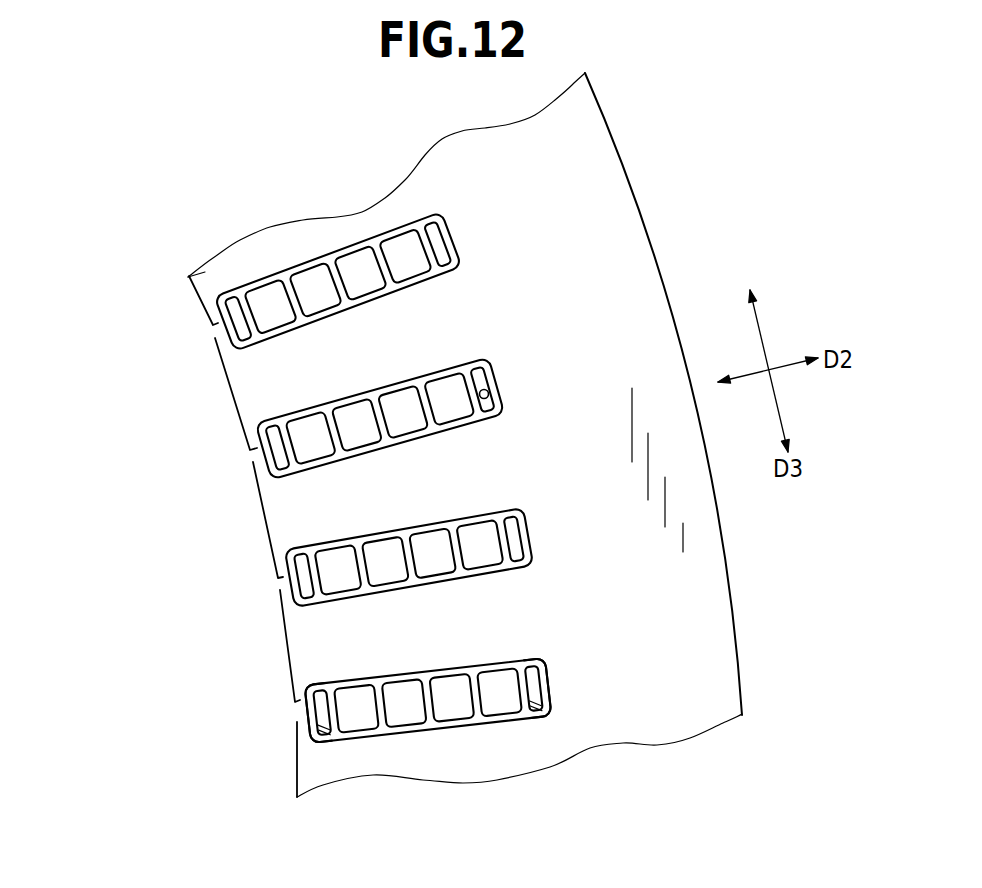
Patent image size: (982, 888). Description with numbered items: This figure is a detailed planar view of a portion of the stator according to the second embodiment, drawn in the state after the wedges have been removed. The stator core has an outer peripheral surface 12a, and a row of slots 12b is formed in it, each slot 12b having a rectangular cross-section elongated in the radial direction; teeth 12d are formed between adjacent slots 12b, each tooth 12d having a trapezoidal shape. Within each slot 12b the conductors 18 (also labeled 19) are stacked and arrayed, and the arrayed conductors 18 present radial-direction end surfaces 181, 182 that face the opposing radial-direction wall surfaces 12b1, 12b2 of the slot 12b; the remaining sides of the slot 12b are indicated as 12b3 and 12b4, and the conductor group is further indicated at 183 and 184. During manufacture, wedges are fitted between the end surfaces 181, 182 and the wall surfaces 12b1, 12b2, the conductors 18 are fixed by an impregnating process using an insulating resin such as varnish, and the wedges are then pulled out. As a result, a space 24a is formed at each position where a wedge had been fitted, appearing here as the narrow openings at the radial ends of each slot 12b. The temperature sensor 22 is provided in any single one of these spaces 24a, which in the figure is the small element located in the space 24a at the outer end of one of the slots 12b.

The outer peripheral surface of stator core 12a is at (593, 222).
The slot 12b is at (430, 393).
The radial-direction wall surface of the slot 12b1 is at (298, 698).
The radial-direction wall surface of the slot 12b2 is at (553, 673).
The third side of tooth 12b3 is at (531, 655).
The fourth side of tooth 12b4 is at (498, 735).
The tooth 12d is at (307, 642).
The conductor 18 is at (363, 444).
The conductor 19 is at (394, 483).
The temperature sensor 22 is at (489, 390).
The space 24a is at (511, 518).
The radial-direction end surface of the arrayed conductors 181 is at (327, 728).
The radial-direction end surface of the arrayed conductors 182 is at (534, 706).
The upper side portion 183 is at (398, 679).
The lower side portion 184 is at (416, 731).